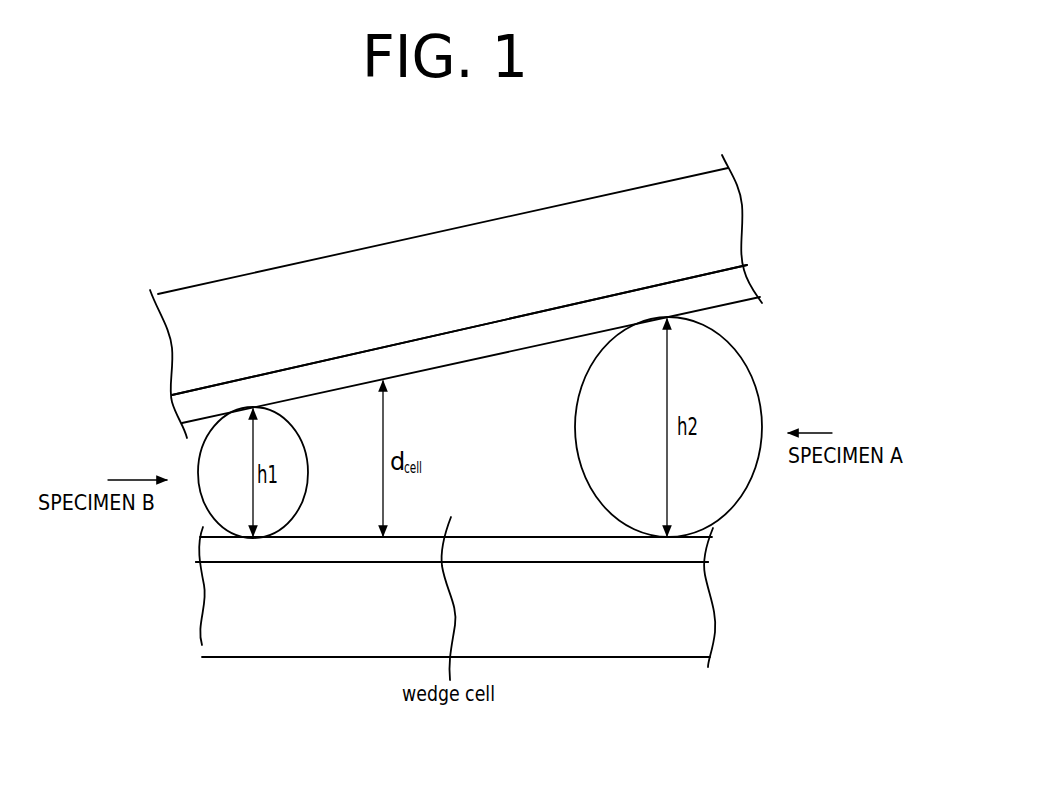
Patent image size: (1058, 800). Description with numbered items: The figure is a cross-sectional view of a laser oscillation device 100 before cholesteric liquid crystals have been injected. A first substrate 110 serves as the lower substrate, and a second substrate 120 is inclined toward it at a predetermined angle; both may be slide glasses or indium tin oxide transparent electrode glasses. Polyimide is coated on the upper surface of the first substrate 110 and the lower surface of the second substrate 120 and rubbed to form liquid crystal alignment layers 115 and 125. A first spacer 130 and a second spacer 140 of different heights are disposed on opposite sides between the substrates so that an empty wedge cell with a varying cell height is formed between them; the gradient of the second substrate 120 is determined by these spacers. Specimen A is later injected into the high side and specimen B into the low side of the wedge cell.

The laser oscillation device 100 is at (377, 218).
The first substrate 110 is at (213, 625).
The liquid crystal alignment layer 115 is at (213, 549).
The second substrate 120 is at (170, 335).
The liquid crystal alignment layer 125 is at (178, 402).
The first spacer 130 is at (217, 513).
The second spacer 140 is at (733, 372).